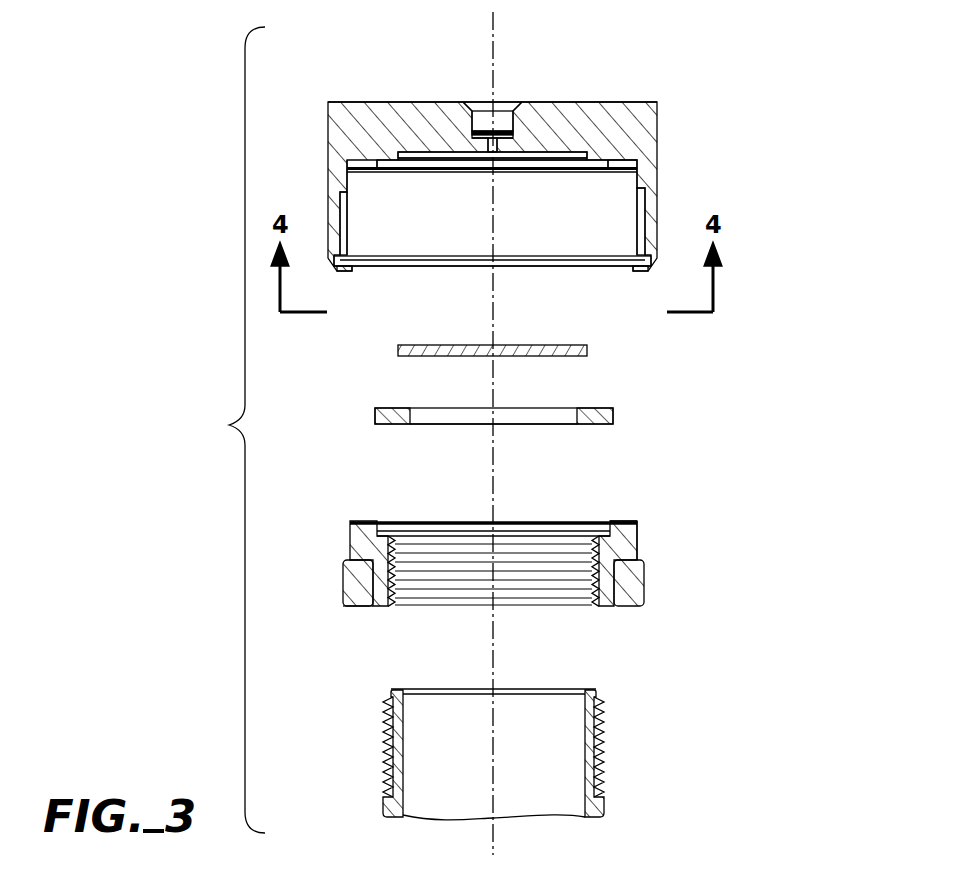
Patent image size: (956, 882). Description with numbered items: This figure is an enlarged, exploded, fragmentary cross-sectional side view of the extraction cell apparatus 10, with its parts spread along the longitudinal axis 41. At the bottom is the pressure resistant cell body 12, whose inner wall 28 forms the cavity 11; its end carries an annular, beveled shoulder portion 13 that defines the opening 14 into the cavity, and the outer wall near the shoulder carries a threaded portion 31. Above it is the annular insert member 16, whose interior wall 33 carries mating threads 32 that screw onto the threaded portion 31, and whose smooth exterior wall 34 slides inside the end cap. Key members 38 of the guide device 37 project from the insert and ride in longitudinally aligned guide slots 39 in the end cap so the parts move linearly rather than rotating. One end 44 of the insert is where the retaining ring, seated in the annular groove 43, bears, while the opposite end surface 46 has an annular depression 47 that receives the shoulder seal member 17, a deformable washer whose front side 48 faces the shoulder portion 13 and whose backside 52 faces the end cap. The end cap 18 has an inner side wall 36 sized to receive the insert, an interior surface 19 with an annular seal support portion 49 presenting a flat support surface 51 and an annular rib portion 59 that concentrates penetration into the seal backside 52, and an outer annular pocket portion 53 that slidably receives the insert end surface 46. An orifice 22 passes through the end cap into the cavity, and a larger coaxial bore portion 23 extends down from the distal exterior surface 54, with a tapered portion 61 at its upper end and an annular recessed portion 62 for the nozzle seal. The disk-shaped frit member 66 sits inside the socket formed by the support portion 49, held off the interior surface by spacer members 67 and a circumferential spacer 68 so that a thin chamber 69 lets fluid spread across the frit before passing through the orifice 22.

The extraction cell apparatus 10 is at (229, 425).
The cavity 11 is at (530, 805).
The cell body 12 is at (501, 752).
The shoulder portion 13 is at (596, 686).
The opening 14 is at (518, 700).
The insert member 16 is at (498, 560).
The shoulder seal member 17 is at (622, 409).
The end cap 18 is at (662, 114).
The interior surface 19 is at (567, 168).
The orifice 22 is at (487, 149).
The bore portion 23 is at (500, 112).
The inner wall 28 is at (405, 761).
The threaded portion 31 is at (390, 742).
The mating threads 32 is at (598, 587).
The interior wall 33 is at (391, 588).
The exterior wall 34 is at (640, 527).
The inner side wall 36 is at (356, 262).
The guide device 37 is at (352, 215).
The key member 38 is at (342, 586).
The guide slot 39 is at (352, 250).
The axis 41 is at (493, 42).
The annular groove 43 is at (642, 258).
The end of insert member 44 is at (351, 608).
The end surface 46 is at (616, 521).
The annular depression 47 is at (392, 527).
The front side 48 is at (590, 425).
The seal support portion 49 is at (620, 173).
The support surface 51 is at (597, 172).
The backside 52 is at (588, 408).
The pocket portion 53 is at (613, 162).
The exterior surface 54 is at (583, 101).
The annular rib portion 59 is at (396, 169).
The tapered portion 61 is at (472, 135).
The annular recessed portion 62 is at (477, 111).
The frit member 66 is at (515, 345).
The spacer member 67 is at (520, 162).
The circumferential spacer 68 is at (341, 197).
The chamber 69 is at (540, 158).